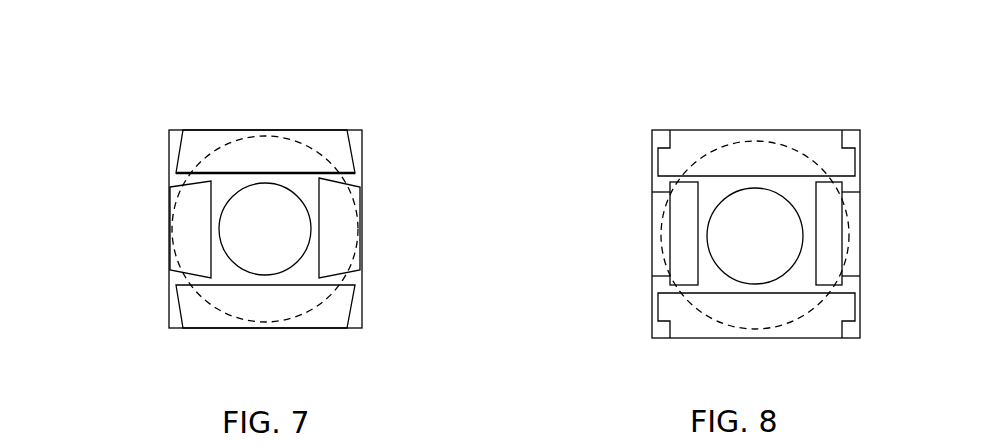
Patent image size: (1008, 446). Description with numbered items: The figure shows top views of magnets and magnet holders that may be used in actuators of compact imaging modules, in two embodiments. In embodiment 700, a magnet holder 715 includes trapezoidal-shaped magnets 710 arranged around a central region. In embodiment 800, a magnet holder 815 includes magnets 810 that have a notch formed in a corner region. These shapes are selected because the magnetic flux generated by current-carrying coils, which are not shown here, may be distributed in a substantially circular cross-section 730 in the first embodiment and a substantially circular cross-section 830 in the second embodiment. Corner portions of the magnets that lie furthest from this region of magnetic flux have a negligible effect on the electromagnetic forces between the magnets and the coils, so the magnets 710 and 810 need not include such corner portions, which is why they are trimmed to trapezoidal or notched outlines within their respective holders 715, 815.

In FIG. 7, the embodiment 700 is at (142, 89).
In FIG. 7, the trapezoidal-shaped magnets 710 is at (169, 231).
In FIG. 7, the magnet holder 715 is at (169, 147).
In FIG. 7, the substantially circular cross-section 730 is at (242, 320).
In FIG. 8, the embodiment 800 is at (619, 101).
In FIG. 8, the magnets 810 is at (652, 226).
In FIG. 8, the magnet holder 815 is at (652, 138).
In FIG. 8, the substantially circular cross-section 830 is at (717, 318).